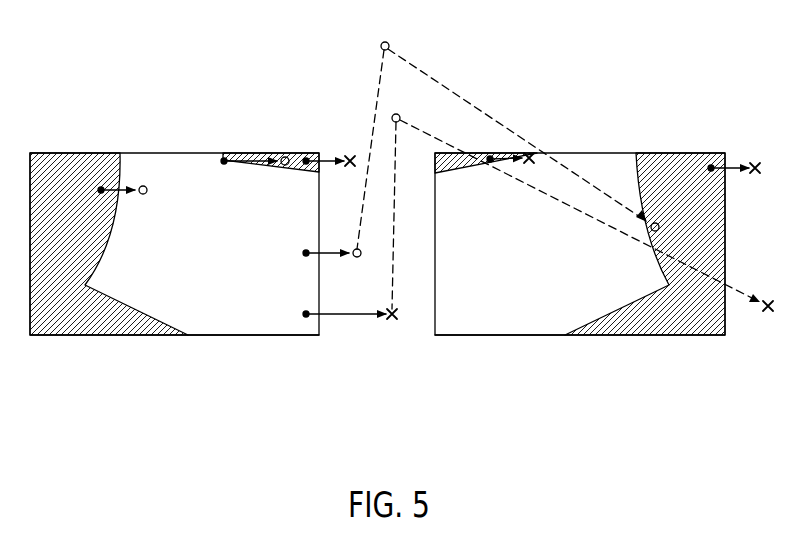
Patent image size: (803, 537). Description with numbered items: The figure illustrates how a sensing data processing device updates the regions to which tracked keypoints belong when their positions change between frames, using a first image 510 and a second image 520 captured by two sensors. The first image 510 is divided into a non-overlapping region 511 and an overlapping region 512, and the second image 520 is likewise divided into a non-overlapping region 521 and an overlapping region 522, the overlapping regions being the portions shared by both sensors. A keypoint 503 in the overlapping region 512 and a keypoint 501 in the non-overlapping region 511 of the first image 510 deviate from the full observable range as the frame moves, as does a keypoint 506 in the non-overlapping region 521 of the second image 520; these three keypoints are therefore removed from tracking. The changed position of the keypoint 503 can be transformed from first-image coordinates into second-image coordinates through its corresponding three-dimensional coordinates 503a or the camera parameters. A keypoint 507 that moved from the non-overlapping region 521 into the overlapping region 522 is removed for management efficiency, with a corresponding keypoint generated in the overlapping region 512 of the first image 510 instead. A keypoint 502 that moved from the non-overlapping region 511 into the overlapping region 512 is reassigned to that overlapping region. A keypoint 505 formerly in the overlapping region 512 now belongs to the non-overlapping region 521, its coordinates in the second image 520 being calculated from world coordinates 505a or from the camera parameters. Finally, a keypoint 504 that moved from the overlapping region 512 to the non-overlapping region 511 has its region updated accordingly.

The first image 510 is at (50, 131).
The non-overlapping region 511 is at (78, 328).
The overlapping region 512 is at (247, 335).
The second image 520 is at (650, 131).
The non-overlapping region 521 is at (673, 327).
The overlapping region 522 is at (522, 328).
The keypoint 501 is at (306, 158).
The keypoint 502 is at (101, 190).
The keypoint 503 is at (306, 314).
The 3D coordinates 503a is at (391, 114).
The keypoint 504 is at (224, 158).
The keypoint 505 is at (306, 253).
The world coordinates 505a is at (381, 43).
The keypoint 506 is at (711, 166).
The keypoint 507 is at (490, 162).